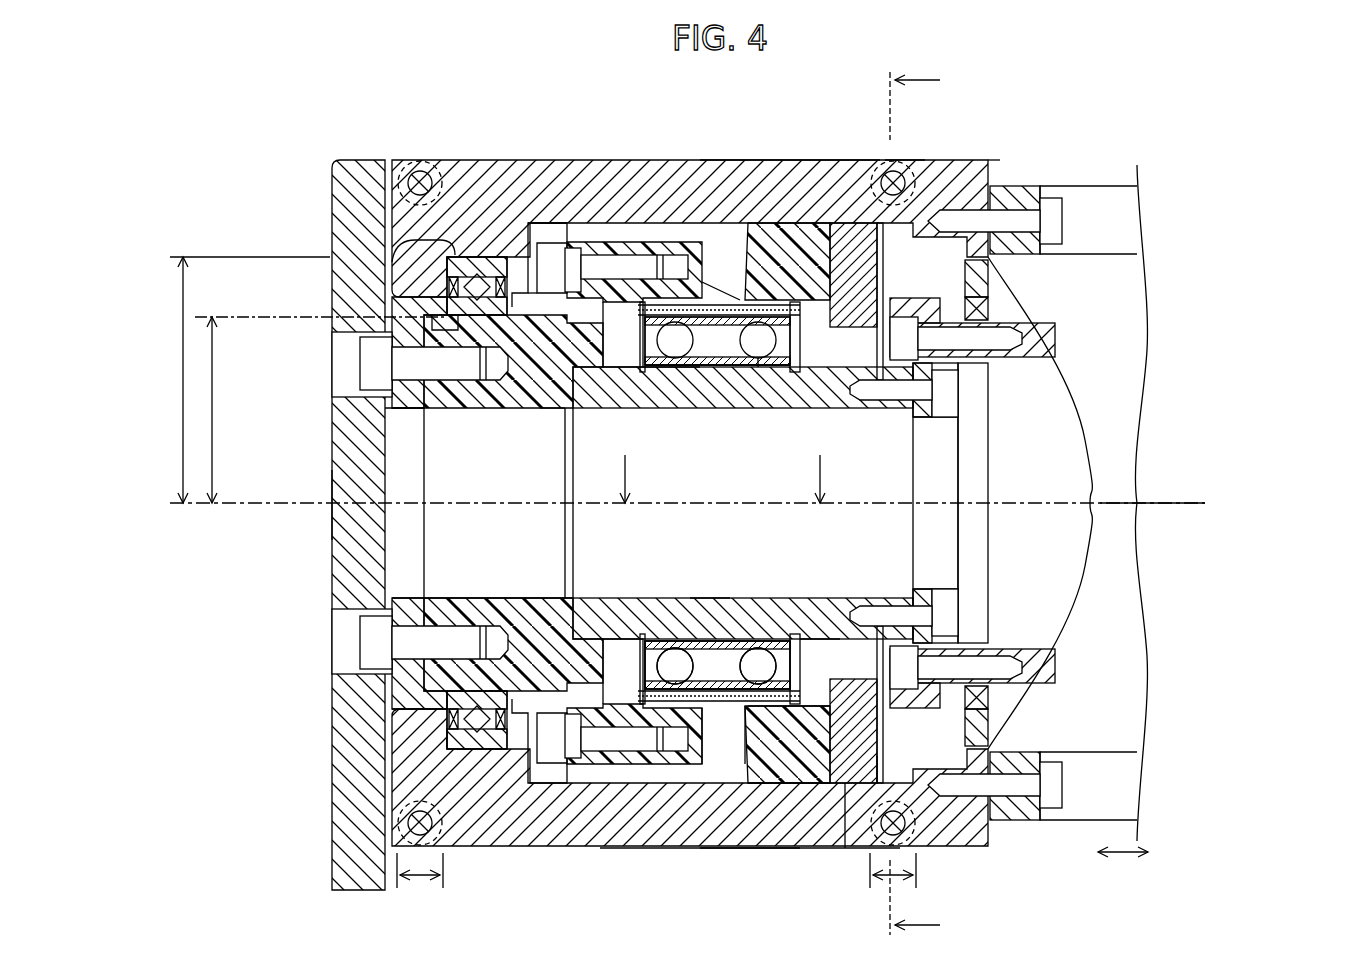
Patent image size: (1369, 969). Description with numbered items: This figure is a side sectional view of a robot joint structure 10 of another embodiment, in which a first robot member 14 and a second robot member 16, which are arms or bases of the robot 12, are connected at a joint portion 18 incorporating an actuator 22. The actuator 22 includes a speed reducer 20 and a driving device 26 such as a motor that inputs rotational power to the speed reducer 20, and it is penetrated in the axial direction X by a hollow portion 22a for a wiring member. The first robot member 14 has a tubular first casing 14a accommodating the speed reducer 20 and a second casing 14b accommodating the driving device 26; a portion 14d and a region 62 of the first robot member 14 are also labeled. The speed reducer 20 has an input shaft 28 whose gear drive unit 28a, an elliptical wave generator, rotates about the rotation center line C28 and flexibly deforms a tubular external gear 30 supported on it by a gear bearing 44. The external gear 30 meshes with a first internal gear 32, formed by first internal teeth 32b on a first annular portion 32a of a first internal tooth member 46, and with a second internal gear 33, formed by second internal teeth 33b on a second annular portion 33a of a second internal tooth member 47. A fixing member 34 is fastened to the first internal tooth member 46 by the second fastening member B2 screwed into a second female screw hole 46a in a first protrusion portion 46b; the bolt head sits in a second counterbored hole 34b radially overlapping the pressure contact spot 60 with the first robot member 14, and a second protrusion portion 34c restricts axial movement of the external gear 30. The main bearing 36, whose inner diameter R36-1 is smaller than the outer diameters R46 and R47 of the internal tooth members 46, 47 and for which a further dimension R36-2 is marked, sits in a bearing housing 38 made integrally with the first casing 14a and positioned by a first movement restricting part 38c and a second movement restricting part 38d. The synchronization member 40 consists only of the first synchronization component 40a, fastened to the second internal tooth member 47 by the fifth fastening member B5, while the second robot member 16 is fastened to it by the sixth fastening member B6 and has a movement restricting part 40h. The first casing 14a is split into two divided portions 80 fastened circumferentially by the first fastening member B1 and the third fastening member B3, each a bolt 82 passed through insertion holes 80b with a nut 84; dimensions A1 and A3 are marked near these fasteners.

The robot joint structure 10 is at (1030, 130).
The robot 12 is at (1100, 164).
The first robot member 14 is at (972, 852).
The first casing 14a is at (810, 852).
The second casing 14b is at (1150, 656).
The housing end portion 14d is at (858, 160).
The second robot member 16 is at (342, 160).
The joint portion 18 is at (294, 408).
The speed reducer 20 is at (716, 804).
The actuator 22 is at (1172, 386).
The hollow portion 22a is at (356, 482).
The driving device 26 is at (1046, 372).
The input shaft 28 is at (822, 409).
The gear drive unit 28a is at (710, 368).
The external gear 30 is at (716, 704).
The first internal gear 32 is at (778, 638).
The first annular portion 32a is at (742, 295).
The first internal teeth 32b is at (774, 368).
The second internal gear 33 is at (664, 638).
The second annular portion 33a is at (665, 300).
The second internal teeth 33b is at (652, 368).
The fixing member 34 is at (886, 284).
The second counterbored hole 34b is at (850, 786).
The second protrusion portion 34c is at (822, 638).
The main bearing 36 is at (480, 255).
The bearing housing 38 is at (540, 262).
The first movement restricting part 38c is at (552, 290).
The second movement restricting part 38d is at (410, 262).
The synchronization member 40 is at (494, 412).
The first synchronization component 40a is at (544, 398).
The movement restricting part 40h is at (446, 330).
The gear bearing 44 is at (714, 596).
The first internal tooth member 46 is at (794, 226).
The second female screw hole 46a is at (816, 760).
The first protrusion portion 46b is at (812, 694).
The second internal tooth member 47 is at (618, 252).
The pressure contact spot 60 is at (842, 226).
The housing portion 62 is at (644, 779).
The divided portions 80 is at (794, 160).
The insertion holes 80b is at (907, 160).
The bolt 82 is at (432, 176).
The nut 84 is at (408, 168).
The width A1 is at (894, 880).
The width A3 is at (420, 880).
The first fastening member B1 is at (968, 160).
The second fastening member B2 is at (882, 760).
The third fastening member B3 is at (437, 170).
The fifth fastening member B5 is at (558, 238).
The sixth fastening member B6 is at (378, 372).
The inner diameter of main bearing R36-1 is at (212, 434).
The radius R36-2 is at (183, 378).
The outer diameter of first internal tooth member R46 is at (823, 474).
The outer diameter of second internal tooth member R47 is at (628, 474).
The rotation center line C28 is at (1200, 503).
The axial direction X is at (1127, 896).